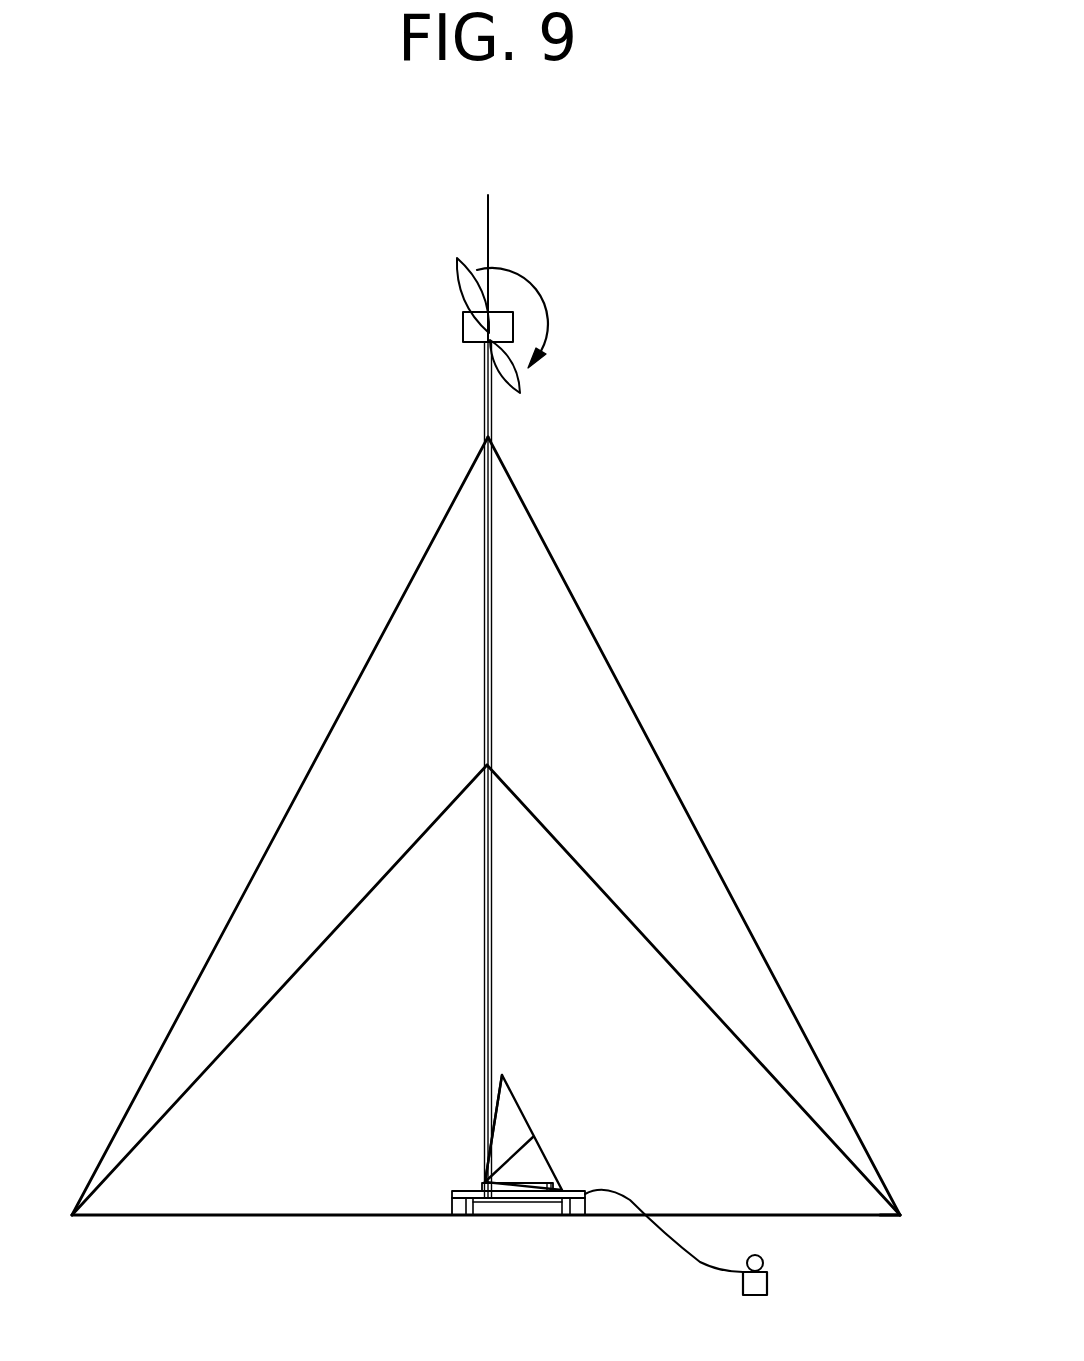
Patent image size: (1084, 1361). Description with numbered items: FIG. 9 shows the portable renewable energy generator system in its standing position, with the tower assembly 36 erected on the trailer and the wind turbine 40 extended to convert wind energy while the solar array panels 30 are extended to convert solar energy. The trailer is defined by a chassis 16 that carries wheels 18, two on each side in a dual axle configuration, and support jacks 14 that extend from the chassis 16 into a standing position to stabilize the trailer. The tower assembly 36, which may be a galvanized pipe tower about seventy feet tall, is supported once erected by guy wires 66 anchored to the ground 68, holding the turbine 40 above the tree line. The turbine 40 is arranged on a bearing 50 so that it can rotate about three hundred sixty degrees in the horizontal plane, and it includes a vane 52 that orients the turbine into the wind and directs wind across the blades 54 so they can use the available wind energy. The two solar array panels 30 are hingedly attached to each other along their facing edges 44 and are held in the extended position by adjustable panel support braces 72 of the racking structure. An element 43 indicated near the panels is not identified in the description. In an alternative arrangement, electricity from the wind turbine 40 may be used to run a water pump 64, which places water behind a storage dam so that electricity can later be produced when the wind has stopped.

The support jacks 14 is at (590, 1187).
The chassis 16 is at (514, 1200).
The wheels 18 is at (571, 1187).
The solar array panels 30 is at (510, 1092).
The tower assembly 36 is at (487, 412).
The wind turbine 40 is at (430, 317).
The pivot direction 43 is at (570, 1120).
The facing edges 44 is at (522, 1113).
The bearing 50 is at (482, 360).
The vane 52 is at (488, 213).
The blades 54 is at (456, 262).
The water pump 64 is at (767, 1283).
The guy wires 66 is at (617, 678).
The ground 68 is at (900, 1216).
The adjustable panel support braces 72 is at (513, 1153).